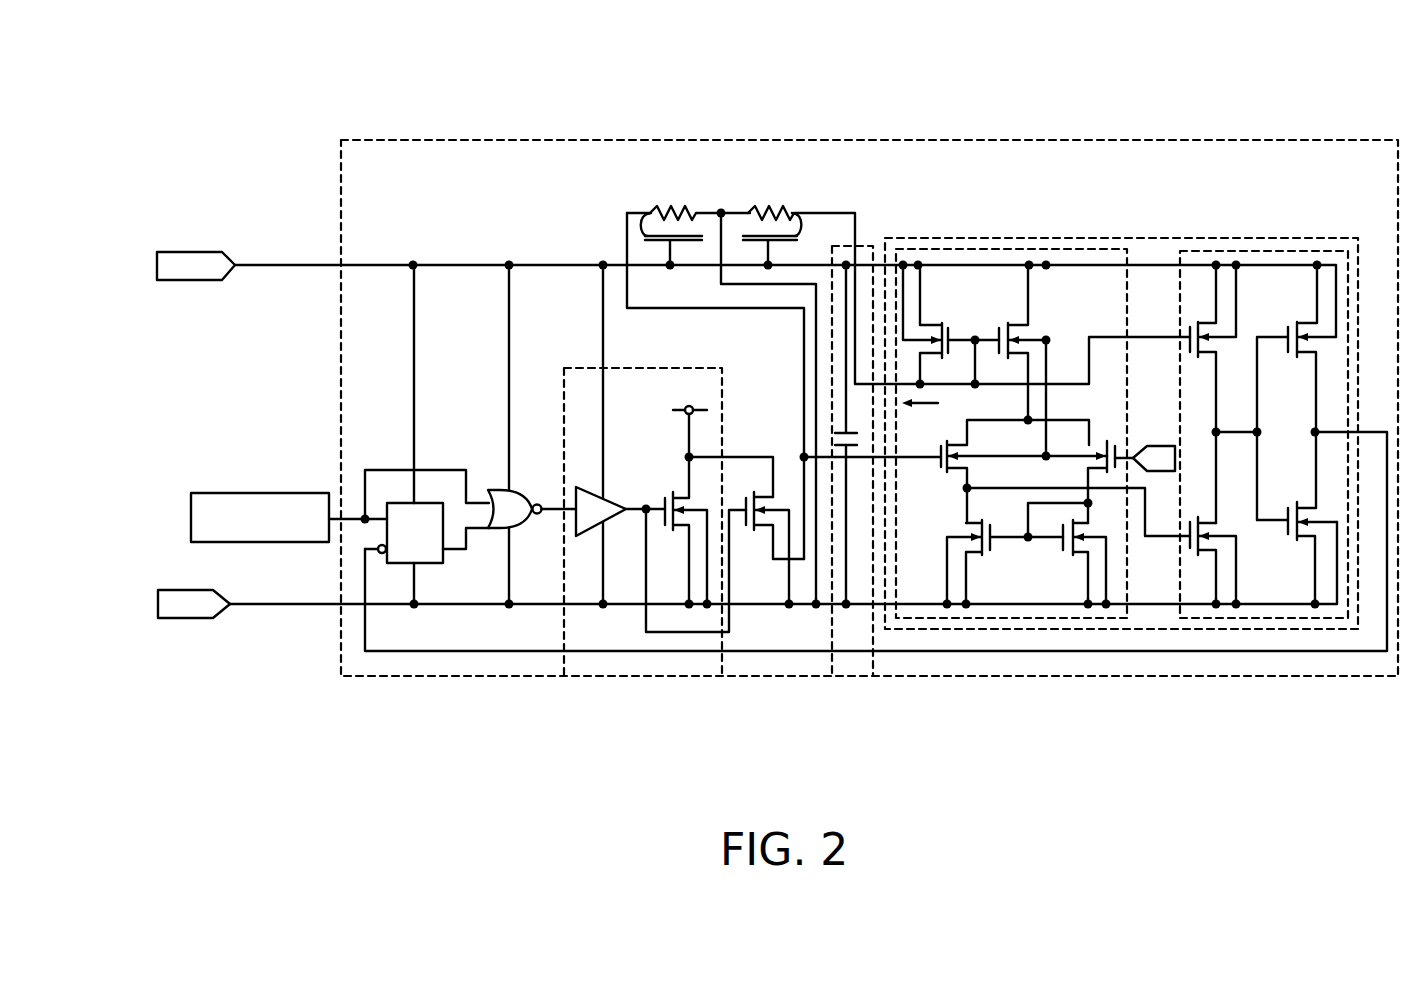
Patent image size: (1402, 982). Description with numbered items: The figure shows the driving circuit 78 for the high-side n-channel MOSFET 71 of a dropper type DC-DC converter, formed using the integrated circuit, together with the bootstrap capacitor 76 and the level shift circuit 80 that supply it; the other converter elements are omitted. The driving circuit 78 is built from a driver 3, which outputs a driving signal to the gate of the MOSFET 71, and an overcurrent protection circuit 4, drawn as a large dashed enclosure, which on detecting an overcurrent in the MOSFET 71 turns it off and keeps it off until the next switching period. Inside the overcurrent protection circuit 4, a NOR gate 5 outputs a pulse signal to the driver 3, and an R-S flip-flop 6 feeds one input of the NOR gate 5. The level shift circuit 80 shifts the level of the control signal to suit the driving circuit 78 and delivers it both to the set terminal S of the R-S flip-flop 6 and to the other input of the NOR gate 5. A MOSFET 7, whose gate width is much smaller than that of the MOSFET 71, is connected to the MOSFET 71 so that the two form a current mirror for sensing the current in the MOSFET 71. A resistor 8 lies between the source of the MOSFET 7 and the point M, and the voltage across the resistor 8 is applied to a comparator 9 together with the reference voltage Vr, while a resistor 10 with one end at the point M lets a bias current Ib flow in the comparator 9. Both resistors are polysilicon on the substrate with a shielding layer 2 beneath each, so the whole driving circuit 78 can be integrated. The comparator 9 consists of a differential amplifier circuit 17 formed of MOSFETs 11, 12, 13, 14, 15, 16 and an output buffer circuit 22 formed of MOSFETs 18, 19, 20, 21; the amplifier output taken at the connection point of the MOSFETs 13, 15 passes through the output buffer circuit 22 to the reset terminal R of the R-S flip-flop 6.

The shielding layer 2 is at (637, 212).
The driver 3 is at (612, 488).
The overcurrent protection circuit 4 is at (888, 138).
The NOR gate 5 is at (528, 490).
The R-S flip-flop 6 is at (402, 563).
The MOSFET 7 is at (763, 531).
The resistor 8 is at (672, 205).
The comparator 9 is at (1115, 238).
The resistor 10 is at (769, 205).
The MOSFET 11 is at (947, 325).
The MOSFET 12 is at (1003, 325).
The MOSFET 13 is at (944, 442).
The MOSFET 14 is at (1110, 442).
The MOSFET 15 is at (975, 560).
The MOSFET 16 is at (1075, 560).
The differential amplifier circuit 17 is at (1006, 249).
The MOSFET 18 is at (1209, 322).
The MOSFET 19 is at (1209, 519).
The MOSFET 20 is at (1306, 321).
The MOSFET 21 is at (1309, 505).
The output buffer circuit 22 is at (1267, 251).
The n-channel MOSFET 71 is at (674, 531).
The capacitor 76 is at (850, 432).
The driving circuit 78 is at (305, 98).
The level shift circuit 80 is at (290, 493).